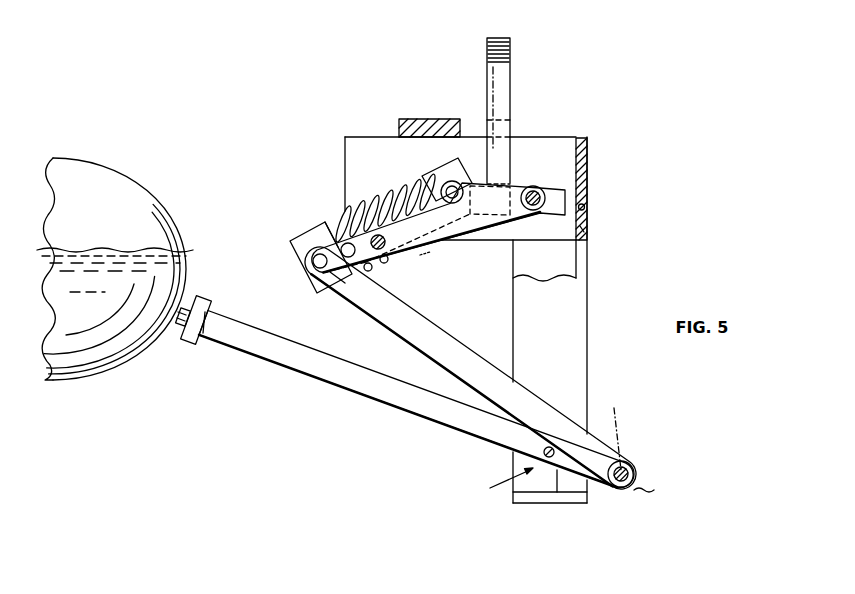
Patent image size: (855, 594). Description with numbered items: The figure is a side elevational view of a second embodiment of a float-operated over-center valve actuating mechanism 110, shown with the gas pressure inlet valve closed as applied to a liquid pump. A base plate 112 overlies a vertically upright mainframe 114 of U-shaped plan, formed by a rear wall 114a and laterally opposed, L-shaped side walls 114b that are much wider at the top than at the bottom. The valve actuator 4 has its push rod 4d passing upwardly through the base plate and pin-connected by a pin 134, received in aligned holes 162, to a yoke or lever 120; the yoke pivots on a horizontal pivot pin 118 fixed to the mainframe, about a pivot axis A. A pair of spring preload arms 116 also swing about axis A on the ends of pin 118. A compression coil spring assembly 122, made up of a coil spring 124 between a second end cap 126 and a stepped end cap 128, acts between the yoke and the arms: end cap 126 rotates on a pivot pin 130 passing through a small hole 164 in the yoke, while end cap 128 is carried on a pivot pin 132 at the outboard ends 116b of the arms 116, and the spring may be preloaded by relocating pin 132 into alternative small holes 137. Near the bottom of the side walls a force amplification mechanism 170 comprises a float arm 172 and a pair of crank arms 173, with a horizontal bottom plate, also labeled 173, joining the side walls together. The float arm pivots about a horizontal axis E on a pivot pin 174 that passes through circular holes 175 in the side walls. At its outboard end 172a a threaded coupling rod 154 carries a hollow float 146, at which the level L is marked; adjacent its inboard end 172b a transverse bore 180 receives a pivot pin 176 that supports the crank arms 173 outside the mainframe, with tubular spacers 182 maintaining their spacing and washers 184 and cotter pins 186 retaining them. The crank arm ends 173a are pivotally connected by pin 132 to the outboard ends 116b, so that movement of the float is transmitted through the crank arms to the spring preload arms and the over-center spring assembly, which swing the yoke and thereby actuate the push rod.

The threaded rod 4 is at (515, 111).
The valve actuator rod 4d is at (505, 174).
The over-center valve actuating mechanism 110 is at (526, 316).
The base plate 112 is at (420, 120).
The mainframe 114 is at (494, 298).
The rear wall 114a is at (588, 175).
The side walls 114b is at (559, 140).
The spring preload arms 116 is at (410, 240).
The outboard ends of spring preload arms 116b is at (343, 222).
The pivot pin 118 is at (588, 229).
The yoke or lever 120 is at (578, 206).
The compression coil spring assembly 122 is at (473, 232).
The coil spring 124 is at (388, 263).
The second end cap 126 is at (428, 180).
The spring end cap 128 is at (314, 222).
The pivot pin 130 is at (439, 173).
The pivot pin 132 is at (306, 265).
The pin 134 is at (510, 186).
The small diameter holes 137 is at (371, 272).
The hollow float 146 is at (147, 200).
The threaded coupling rod 154 is at (191, 298).
The aligned holes 162 is at (507, 205).
The small diameter hole 164 is at (456, 185).
The force amplification mechanism 170 is at (514, 494).
The float arm 172 is at (420, 425).
The outboard end of float arm 172a is at (217, 330).
The inboard end of float arm 172b is at (592, 491).
The crank arms 173 is at (470, 393).
The crank arm ends 173a is at (333, 292).
The pivot pin 174 is at (544, 452).
The circular holes 175 is at (558, 484).
The pivot pin 176 is at (648, 447).
The transverse bore 180 is at (633, 474).
The tubular spacers 182 is at (612, 430).
The washers 184 is at (628, 464).
The cotter pins 186 is at (660, 493).
The pivot axis A is at (531, 213).
The horizontal axis E is at (506, 484).
The liquid level L is at (135, 250).